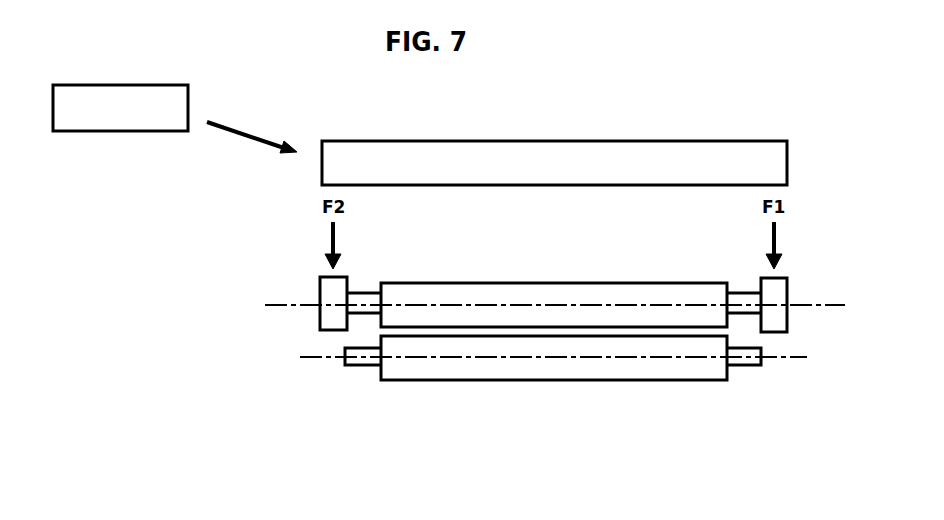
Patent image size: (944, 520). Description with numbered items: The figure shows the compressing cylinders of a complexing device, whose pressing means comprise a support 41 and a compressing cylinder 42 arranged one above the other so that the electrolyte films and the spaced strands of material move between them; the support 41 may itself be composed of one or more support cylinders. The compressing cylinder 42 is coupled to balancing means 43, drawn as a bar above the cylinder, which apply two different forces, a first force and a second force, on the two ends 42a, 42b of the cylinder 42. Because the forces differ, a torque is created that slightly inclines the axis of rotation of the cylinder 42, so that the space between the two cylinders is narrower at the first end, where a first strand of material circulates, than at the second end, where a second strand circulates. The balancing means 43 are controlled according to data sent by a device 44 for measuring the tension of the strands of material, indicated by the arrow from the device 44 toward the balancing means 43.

The device for measuring the tension of the strands of material 44 is at (170, 108).
The balancing means 43 is at (771, 162).
The compressing cylinder 42 is at (651, 293).
The first end of the cylinder 42a is at (775, 289).
The second end of the cylinder 42b is at (332, 291).
The support 41 is at (645, 372).